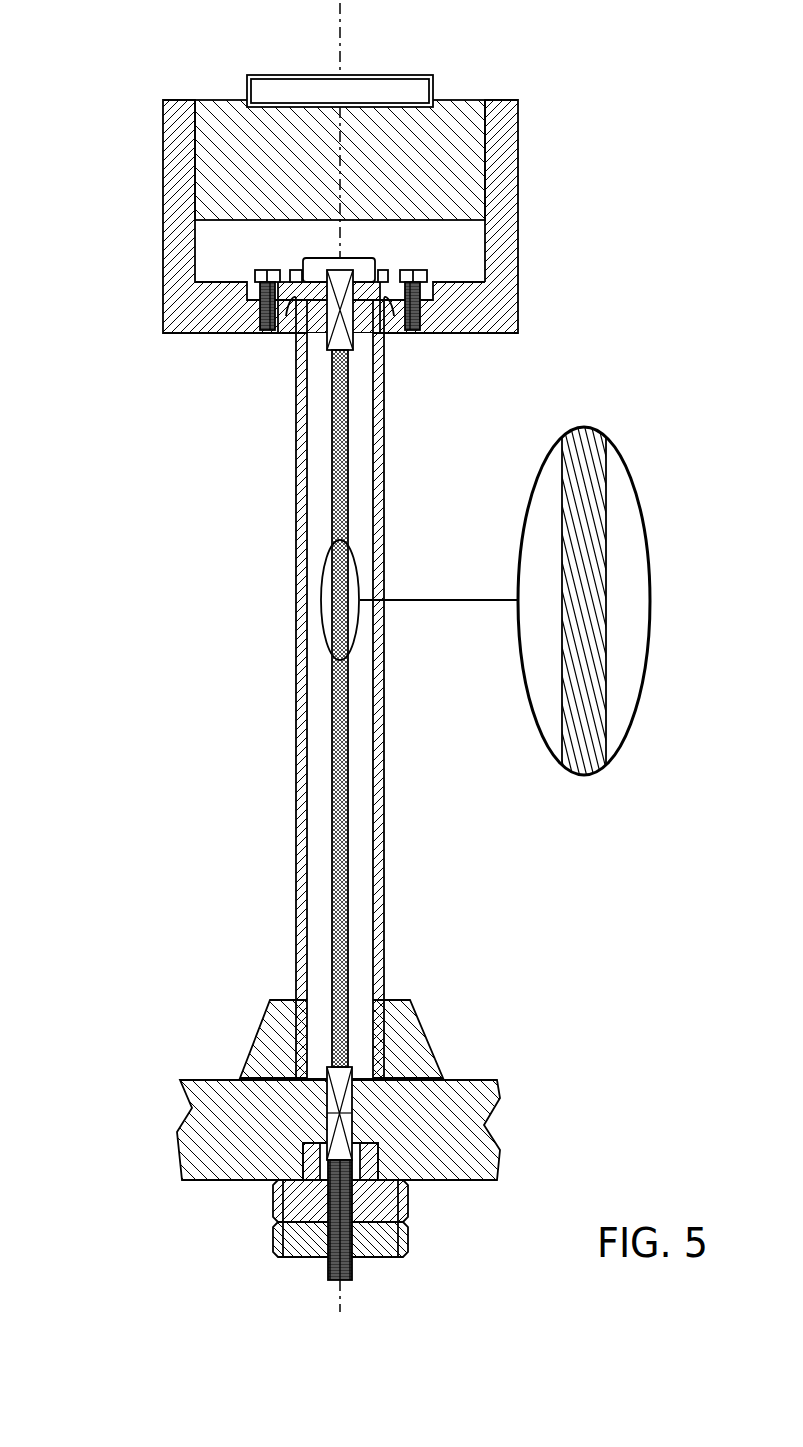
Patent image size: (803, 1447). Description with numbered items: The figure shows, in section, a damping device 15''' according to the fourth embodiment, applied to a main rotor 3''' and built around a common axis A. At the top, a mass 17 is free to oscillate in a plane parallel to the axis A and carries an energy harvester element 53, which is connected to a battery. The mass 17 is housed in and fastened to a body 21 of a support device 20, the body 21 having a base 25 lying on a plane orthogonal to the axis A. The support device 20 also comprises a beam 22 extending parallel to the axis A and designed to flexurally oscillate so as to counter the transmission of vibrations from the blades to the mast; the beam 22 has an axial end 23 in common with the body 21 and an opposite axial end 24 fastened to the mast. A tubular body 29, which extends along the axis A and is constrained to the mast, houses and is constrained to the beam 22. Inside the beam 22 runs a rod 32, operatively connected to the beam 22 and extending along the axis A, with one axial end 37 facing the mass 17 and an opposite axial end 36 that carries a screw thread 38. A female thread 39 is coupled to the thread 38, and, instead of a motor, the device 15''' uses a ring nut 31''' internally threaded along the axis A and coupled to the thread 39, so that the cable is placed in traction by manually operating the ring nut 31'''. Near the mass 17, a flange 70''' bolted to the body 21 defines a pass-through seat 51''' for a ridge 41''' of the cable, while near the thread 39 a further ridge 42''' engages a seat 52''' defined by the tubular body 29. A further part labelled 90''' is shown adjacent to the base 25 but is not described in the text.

The axis A is at (340, 68).
The main rotor 3''' is at (371, 692).
The device 15''' is at (371, 692).
The mass 17 is at (237, 162).
The support device 20 is at (312, 171).
The body 21 is at (178, 231).
The beam 22 is at (383, 912).
The axial end 23 is at (385, 343).
The axial end 24 is at (385, 1068).
The base 25 is at (215, 310).
The tubular body 29 is at (443, 1118).
The ring nut 31''' is at (370, 1268).
The rod 32 is at (357, 522).
The axial end 36 is at (333, 1287).
The axial end 37 is at (352, 284).
The thread 38 is at (320, 1240).
The thread 39 is at (345, 1210).
The ridge 41''' is at (306, 354).
The ridge 42''' is at (392, 1066).
The pass-through seat 51''' is at (314, 262).
The seat 52''' is at (267, 1067).
The energy harvester element 53 is at (403, 86).
The flange 70''' is at (225, 349).
The fastener 90''' is at (410, 300).